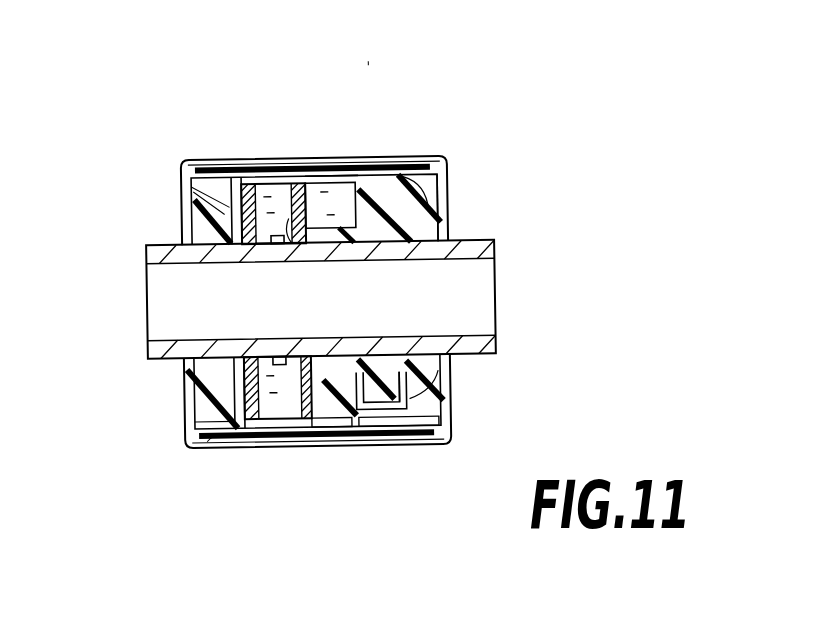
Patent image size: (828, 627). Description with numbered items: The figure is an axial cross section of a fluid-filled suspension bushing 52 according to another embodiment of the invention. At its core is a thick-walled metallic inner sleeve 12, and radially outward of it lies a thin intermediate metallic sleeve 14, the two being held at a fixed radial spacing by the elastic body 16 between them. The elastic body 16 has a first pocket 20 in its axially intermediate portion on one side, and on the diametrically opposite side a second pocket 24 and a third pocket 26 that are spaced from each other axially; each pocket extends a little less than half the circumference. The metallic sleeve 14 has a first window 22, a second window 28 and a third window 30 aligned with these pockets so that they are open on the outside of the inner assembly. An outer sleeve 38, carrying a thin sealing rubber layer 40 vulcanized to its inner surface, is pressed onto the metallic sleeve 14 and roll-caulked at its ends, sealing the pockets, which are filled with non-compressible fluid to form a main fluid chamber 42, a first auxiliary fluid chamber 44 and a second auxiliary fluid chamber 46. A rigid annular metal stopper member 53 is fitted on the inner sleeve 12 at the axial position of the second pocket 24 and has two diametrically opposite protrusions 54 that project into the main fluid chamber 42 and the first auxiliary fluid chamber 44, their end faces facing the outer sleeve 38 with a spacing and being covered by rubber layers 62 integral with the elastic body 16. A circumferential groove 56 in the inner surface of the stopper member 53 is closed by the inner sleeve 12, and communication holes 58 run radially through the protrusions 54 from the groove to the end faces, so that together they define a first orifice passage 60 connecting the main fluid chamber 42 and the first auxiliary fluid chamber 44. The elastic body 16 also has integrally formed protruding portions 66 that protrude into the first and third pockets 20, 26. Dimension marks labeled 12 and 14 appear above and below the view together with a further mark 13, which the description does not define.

The inner sleeve 12 is at (478, 350).
The axial dimension 13 is at (372, 100).
The metallic sleeve 14 is at (207, 448).
The elastic body 16 is at (183, 234).
The first pocket 20 is at (443, 212).
The first window 22 is at (228, 167).
The second pocket 24 is at (205, 379).
The third pocket 26 is at (402, 385).
The second window 28 is at (228, 447).
The third window 30 is at (406, 441).
The outer sleeve 38 is at (342, 160).
The sealing rubber layer 40 is at (348, 446).
The main fluid chamber 42 is at (320, 174).
The first auxiliary fluid chamber 44 is at (302, 446).
The second auxiliary fluid chamber 46 is at (392, 446).
The suspension bushing 52 is at (433, 97).
The stopper member 53 is at (240, 212).
The protrusions 54 is at (190, 188).
The circumferential groove 56 is at (279, 243).
The communication holes 58 is at (291, 245).
The first orifice passage 60 is at (285, 358).
The rubber layers 62 is at (256, 158).
The protruding portions 66 is at (383, 175).